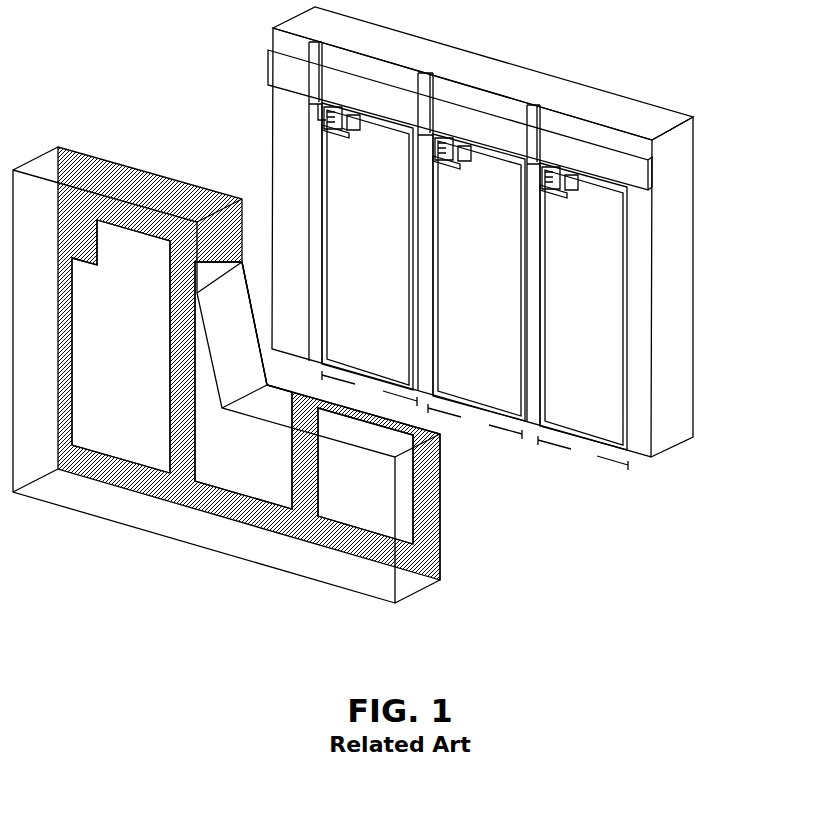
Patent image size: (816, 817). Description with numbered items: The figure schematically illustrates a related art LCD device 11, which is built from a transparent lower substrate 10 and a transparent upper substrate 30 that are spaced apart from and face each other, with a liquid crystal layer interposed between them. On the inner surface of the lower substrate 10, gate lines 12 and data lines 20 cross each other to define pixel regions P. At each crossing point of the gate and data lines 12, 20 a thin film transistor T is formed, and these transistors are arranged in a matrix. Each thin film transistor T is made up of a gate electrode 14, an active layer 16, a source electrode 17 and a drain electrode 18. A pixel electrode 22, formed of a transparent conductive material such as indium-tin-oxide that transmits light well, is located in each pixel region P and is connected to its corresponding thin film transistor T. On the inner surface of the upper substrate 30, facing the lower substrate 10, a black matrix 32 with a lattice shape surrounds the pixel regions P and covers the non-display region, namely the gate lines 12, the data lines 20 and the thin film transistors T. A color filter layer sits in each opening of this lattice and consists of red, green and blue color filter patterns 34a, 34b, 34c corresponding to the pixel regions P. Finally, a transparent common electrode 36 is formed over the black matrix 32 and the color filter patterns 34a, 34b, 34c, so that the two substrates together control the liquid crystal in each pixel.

The lower substrate 10 is at (683, 353).
The LCD device 11 is at (598, 525).
The gate line 12 is at (640, 174).
The gate electrode 14 is at (343, 138).
The active layer 16 is at (336, 112).
The source electrode 17 is at (318, 118).
The drain electrode 18 is at (365, 134).
The data line 20 is at (533, 108).
The pixel electrode 22 is at (630, 247).
The upper substrate 30 is at (400, 599).
The black matrix 32 is at (437, 516).
The red color filter pattern 34a is at (103, 440).
The green color filter pattern 34b is at (219, 478).
The blue color filter pattern 34c is at (331, 508).
The common electrode 36 is at (441, 545).
The thin film transistor T is at (355, 136).
The pixel region P is at (475, 420).